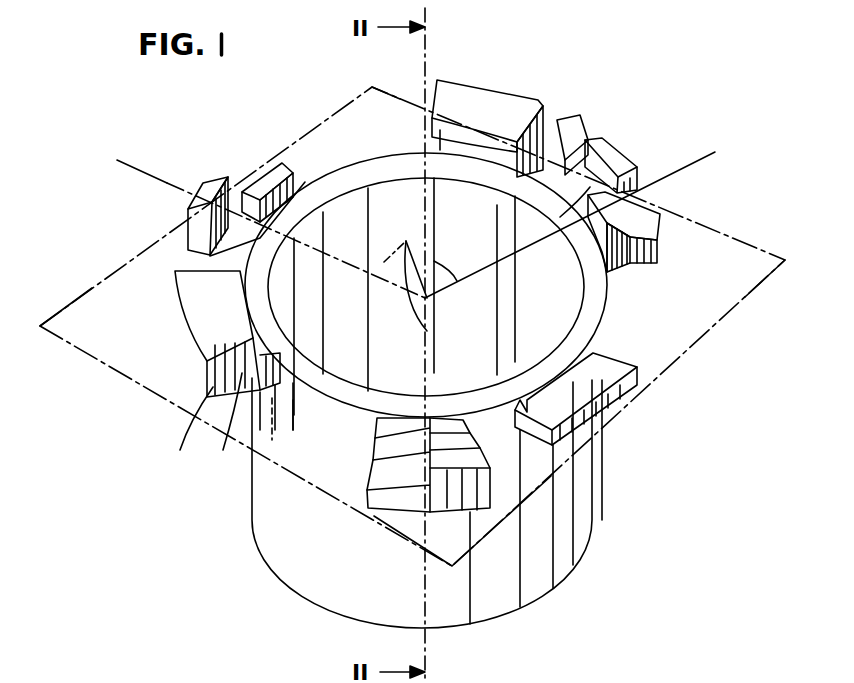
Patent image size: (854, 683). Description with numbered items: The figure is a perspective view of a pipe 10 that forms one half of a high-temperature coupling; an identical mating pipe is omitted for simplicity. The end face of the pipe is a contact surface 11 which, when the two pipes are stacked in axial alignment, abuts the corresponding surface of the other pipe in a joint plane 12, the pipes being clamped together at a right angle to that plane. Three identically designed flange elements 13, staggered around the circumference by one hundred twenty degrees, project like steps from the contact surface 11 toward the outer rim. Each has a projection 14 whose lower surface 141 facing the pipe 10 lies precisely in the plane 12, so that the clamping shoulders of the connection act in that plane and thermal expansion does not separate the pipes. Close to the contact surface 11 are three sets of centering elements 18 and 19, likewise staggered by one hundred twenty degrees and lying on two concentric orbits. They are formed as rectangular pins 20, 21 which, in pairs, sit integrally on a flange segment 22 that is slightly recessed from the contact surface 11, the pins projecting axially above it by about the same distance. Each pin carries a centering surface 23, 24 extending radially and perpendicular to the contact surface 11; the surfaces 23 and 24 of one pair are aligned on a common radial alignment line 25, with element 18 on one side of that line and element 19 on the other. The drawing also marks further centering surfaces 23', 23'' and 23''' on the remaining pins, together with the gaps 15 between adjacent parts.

The pipe 10 is at (272, 546).
The contact surface 11 is at (327, 188).
The joint plane 12 is at (150, 362).
The flange element 13 is at (448, 135).
The projection 14 is at (455, 100).
The gap 15 is at (172, 246).
The centering element 18 is at (640, 151).
The centering element 19 is at (645, 214).
The rectangular pin 20 is at (593, 143).
The rectangular pin 21 is at (583, 230).
The flange segment 22 is at (245, 175).
The centering surface 23 is at (676, 193).
The edge 23' is at (374, 573).
The edge 23'' is at (97, 218).
The edge 23''' is at (114, 268).
The centering surface 24 is at (560, 217).
The radial alignment line 25 is at (420, 275).
The lower surface 141 is at (230, 410).